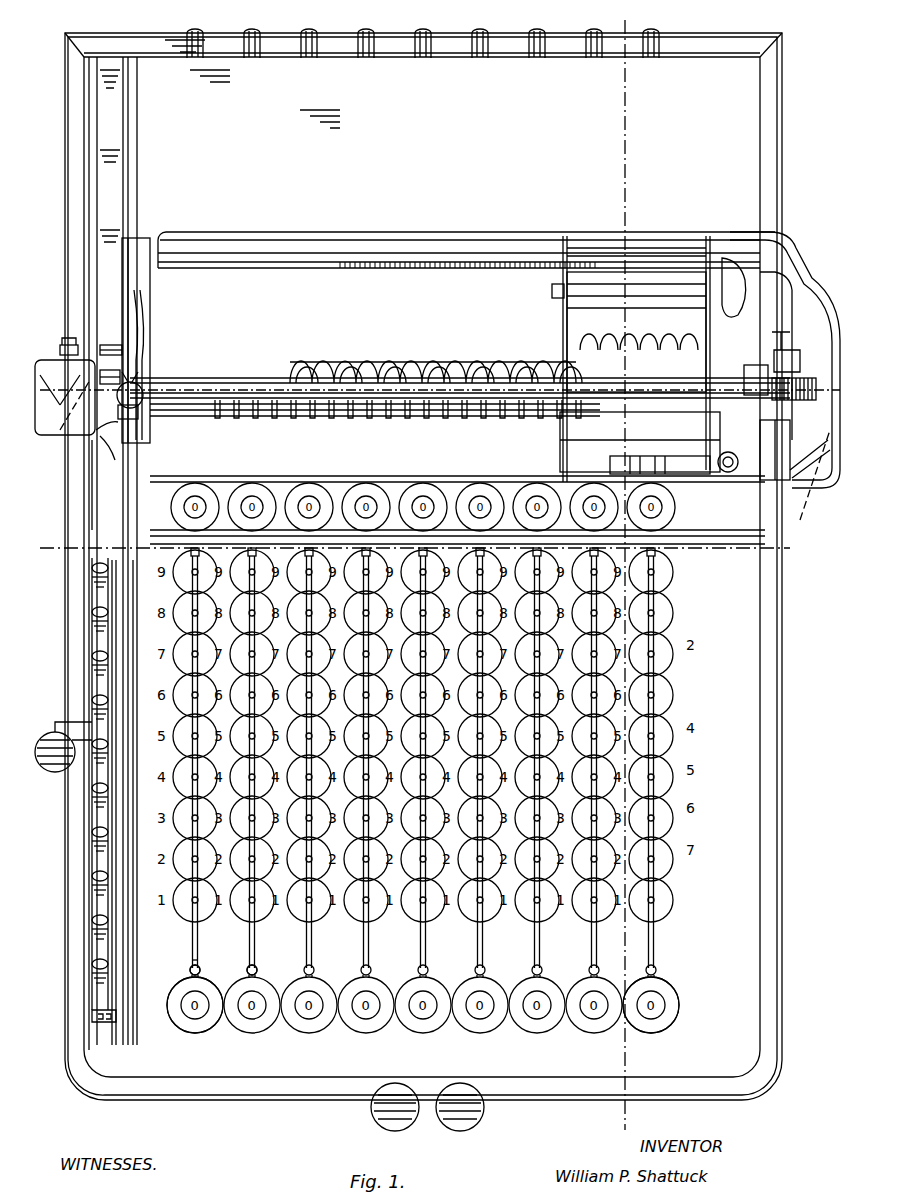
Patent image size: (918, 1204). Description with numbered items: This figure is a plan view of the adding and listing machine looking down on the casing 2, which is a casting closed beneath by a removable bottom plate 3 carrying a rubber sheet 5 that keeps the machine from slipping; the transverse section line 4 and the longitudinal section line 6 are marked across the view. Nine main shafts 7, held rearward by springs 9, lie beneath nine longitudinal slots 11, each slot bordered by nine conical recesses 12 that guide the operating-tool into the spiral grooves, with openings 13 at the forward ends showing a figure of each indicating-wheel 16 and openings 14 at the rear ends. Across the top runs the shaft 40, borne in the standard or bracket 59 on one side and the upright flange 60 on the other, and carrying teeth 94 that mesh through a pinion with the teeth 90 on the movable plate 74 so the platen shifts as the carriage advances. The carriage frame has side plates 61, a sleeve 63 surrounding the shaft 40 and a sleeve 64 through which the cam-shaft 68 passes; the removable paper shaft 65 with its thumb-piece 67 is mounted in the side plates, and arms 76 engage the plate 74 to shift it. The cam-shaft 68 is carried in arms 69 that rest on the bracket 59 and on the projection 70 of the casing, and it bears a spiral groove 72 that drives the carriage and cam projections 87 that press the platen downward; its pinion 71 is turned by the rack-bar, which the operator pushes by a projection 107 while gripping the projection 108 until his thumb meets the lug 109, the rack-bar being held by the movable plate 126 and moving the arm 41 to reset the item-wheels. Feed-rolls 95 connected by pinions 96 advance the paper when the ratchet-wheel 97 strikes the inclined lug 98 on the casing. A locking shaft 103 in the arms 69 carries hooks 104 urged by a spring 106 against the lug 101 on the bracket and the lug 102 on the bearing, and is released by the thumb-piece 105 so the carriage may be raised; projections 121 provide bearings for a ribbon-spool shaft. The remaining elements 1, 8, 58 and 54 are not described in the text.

The casing 2 is at (760, 790).
The main shafts 7 is at (200, 58).
The section line 6 6 is at (604, 576).
The section line 4 4 is at (428, 534).
The rubber sheet or plate 5 is at (445, 450).
The shaft 40 is at (290, 268).
The teeth on shaft 40 94 is at (397, 270).
The arm 41 is at (150, 332).
The arms 69 is at (145, 315).
The upright flange 60 is at (111, 339).
The shaft 103 is at (232, 378).
The cam-shaft 68 is at (350, 366).
The cam projections 87 is at (296, 418).
The spiral groove 72 is at (440, 418).
The arms 76 is at (572, 270).
The sleeve 63 is at (640, 250).
The sleeve 64 is at (600, 350).
The side plates 61 is at (563, 325).
The removable shaft 65 is at (552, 290).
The thumb-piece 67 is at (737, 262).
The feed-rolls 95 is at (620, 446).
The pinions 96 is at (556, 476).
The ratchet-wheel 97 is at (690, 478).
The inclined lug 98 is at (660, 474).
The openings 14 is at (255, 490).
The projection 70 is at (138, 440).
The thumb-piece 105 is at (140, 388).
The hooks 104 is at (138, 432).
The projection 108 is at (65, 397).
The pinion 71 is at (88, 395).
The lug 102 is at (102, 430).
The lug 109 is at (100, 445).
The movable plate 126 is at (88, 525).
The standard or bracket 59 is at (800, 288).
The spring 106 is at (795, 300).
The projections 121 is at (791, 343).
The movable plate 74 is at (755, 365).
The teeth 90 is at (760, 432).
The lug 101 is at (809, 455).
The conical recesses 12 is at (180, 640).
The longitudinal slots 11 is at (362, 944).
The indicating-wheel 16 is at (256, 995).
The openings 13 is at (366, 1022).
The key row 1 is at (692, 602).
The bottom plate 3 is at (690, 687).
The key row 8 is at (694, 893).
The springs 9 is at (692, 935).
The projections 107 is at (92, 700).
The wheel 58 is at (55, 745).
The rollers 54 is at (380, 1112).